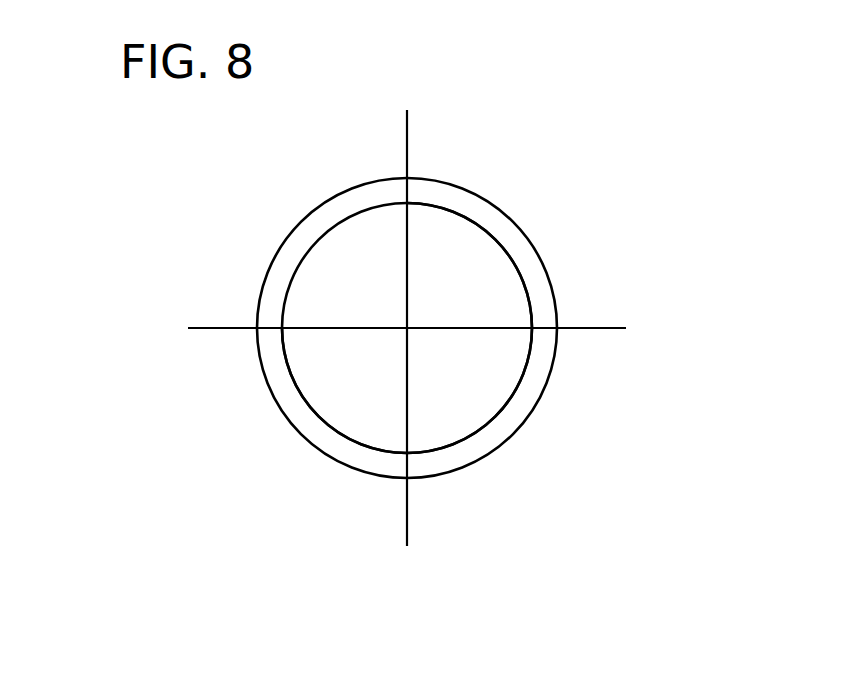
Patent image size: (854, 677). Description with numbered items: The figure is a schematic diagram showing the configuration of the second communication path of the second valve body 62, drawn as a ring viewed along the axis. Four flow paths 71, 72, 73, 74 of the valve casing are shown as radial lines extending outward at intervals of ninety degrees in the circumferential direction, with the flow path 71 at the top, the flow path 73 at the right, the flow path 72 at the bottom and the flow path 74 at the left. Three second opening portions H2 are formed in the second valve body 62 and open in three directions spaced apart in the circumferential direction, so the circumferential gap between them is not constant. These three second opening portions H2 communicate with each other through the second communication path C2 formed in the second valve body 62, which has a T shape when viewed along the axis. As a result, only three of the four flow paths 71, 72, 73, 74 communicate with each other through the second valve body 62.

The second valve body 62 is at (468, 265).
The flow path 71 is at (409, 127).
The flow path 72 is at (406, 530).
The flow path 73 is at (607, 327).
The flow path 74 is at (200, 330).
The second opening portion H2 is at (409, 203).
The second communication path C2 is at (450, 330).